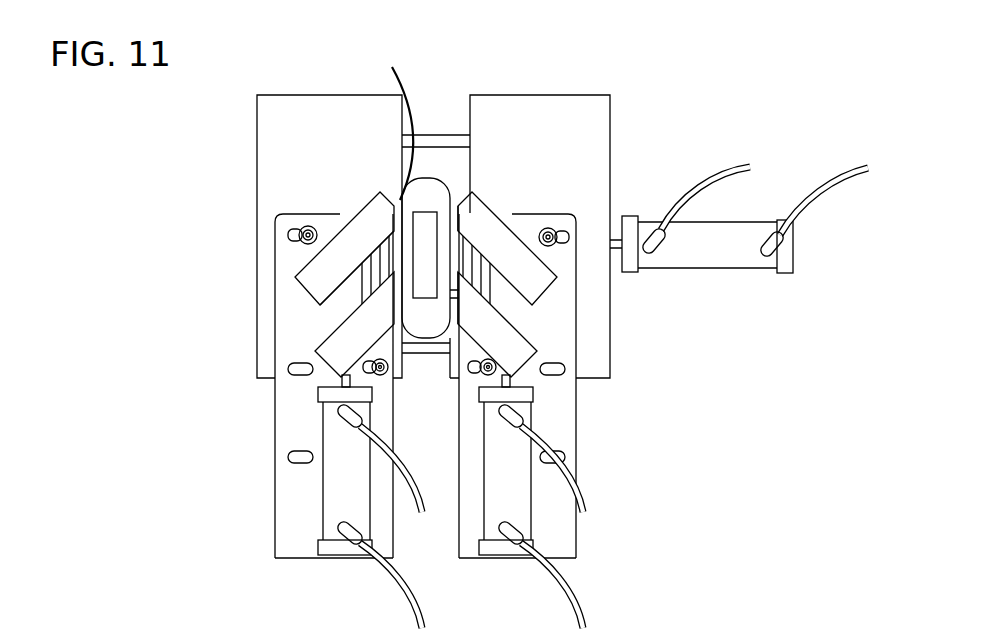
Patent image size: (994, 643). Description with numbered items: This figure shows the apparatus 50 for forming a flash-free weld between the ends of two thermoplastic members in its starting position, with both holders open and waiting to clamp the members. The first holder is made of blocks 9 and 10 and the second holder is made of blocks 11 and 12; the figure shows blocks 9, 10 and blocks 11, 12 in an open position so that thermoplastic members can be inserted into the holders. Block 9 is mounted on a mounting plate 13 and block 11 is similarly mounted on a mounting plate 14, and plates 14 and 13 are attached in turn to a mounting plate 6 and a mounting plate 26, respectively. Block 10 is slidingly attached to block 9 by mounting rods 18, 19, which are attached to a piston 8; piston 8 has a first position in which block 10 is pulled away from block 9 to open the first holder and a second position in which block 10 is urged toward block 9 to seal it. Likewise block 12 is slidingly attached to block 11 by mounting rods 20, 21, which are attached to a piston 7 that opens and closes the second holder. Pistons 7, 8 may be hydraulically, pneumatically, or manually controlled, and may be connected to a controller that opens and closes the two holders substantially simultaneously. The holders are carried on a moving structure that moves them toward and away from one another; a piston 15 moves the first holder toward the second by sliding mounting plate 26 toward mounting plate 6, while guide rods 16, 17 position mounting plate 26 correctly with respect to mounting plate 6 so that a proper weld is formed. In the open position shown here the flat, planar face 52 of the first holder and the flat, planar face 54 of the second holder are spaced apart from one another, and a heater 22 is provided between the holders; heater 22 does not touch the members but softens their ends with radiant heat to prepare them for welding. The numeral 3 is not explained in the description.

The guide member 3 is at (455, 298).
The mounting plate 6 is at (323, 116).
The piston 7 is at (328, 513).
The piston 8 is at (497, 518).
The block 9 is at (490, 228).
The block 10 is at (510, 353).
The block 11 is at (355, 235).
The block 12 is at (340, 352).
The mounting plate 13 is at (557, 528).
The mounting plate 14 is at (297, 486).
The piston 15 is at (733, 233).
The guide rod 16 is at (424, 134).
The guide rod 17 is at (440, 357).
The mounting rod 18 is at (470, 263).
The mounting rod 19 is at (488, 285).
The mounting rod 20 is at (375, 270).
The mounting rod 21 is at (352, 292).
The heater 22 is at (428, 193).
The mounting plate 26 is at (595, 112).
The apparatus 50 is at (648, 454).
The flat, planar face 52 is at (455, 202).
The flat, planar face 54 is at (385, 120).